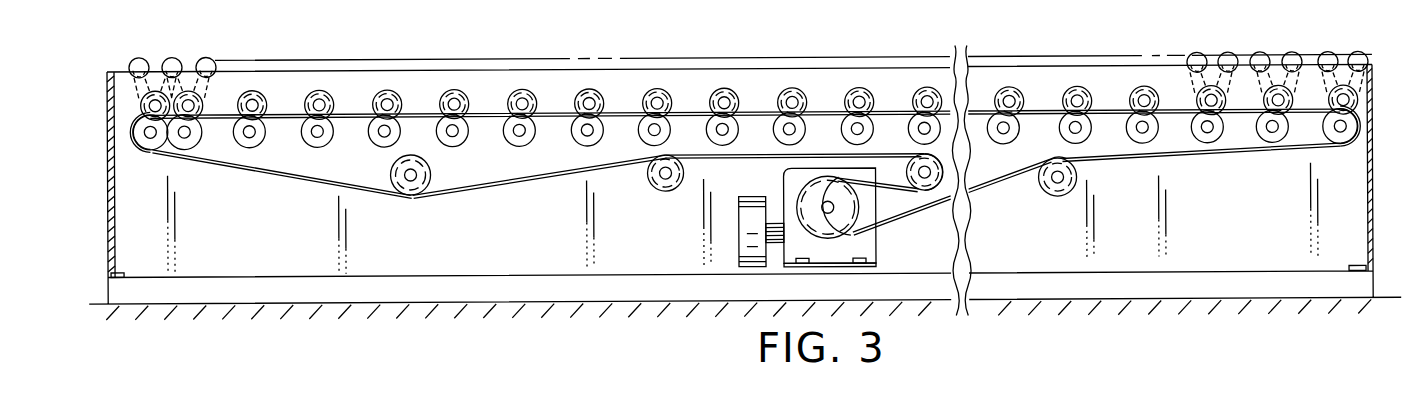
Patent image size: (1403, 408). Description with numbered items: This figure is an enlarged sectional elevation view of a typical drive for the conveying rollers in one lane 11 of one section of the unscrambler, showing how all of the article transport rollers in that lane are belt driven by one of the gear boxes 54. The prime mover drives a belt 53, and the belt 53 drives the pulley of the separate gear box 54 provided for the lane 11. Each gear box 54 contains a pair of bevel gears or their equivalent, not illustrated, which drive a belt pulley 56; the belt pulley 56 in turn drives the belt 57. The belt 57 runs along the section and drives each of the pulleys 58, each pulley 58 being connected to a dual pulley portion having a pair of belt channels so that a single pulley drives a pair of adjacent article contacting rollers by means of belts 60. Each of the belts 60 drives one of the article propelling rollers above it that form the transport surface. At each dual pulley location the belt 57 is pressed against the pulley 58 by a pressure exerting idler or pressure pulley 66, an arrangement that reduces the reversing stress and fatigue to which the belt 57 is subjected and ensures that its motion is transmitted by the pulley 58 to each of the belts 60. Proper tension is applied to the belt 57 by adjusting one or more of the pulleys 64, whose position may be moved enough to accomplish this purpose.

The lane 11 is at (174, 59).
The belt 53 is at (752, 200).
The gear box 54 is at (866, 252).
The belt pulley 56 is at (852, 210).
The belt 57 is at (559, 180).
The pulley 58 is at (1232, 102).
The belt 60 is at (212, 86).
The pulley 64 is at (413, 188).
The pressure pulley 66 is at (1207, 152).